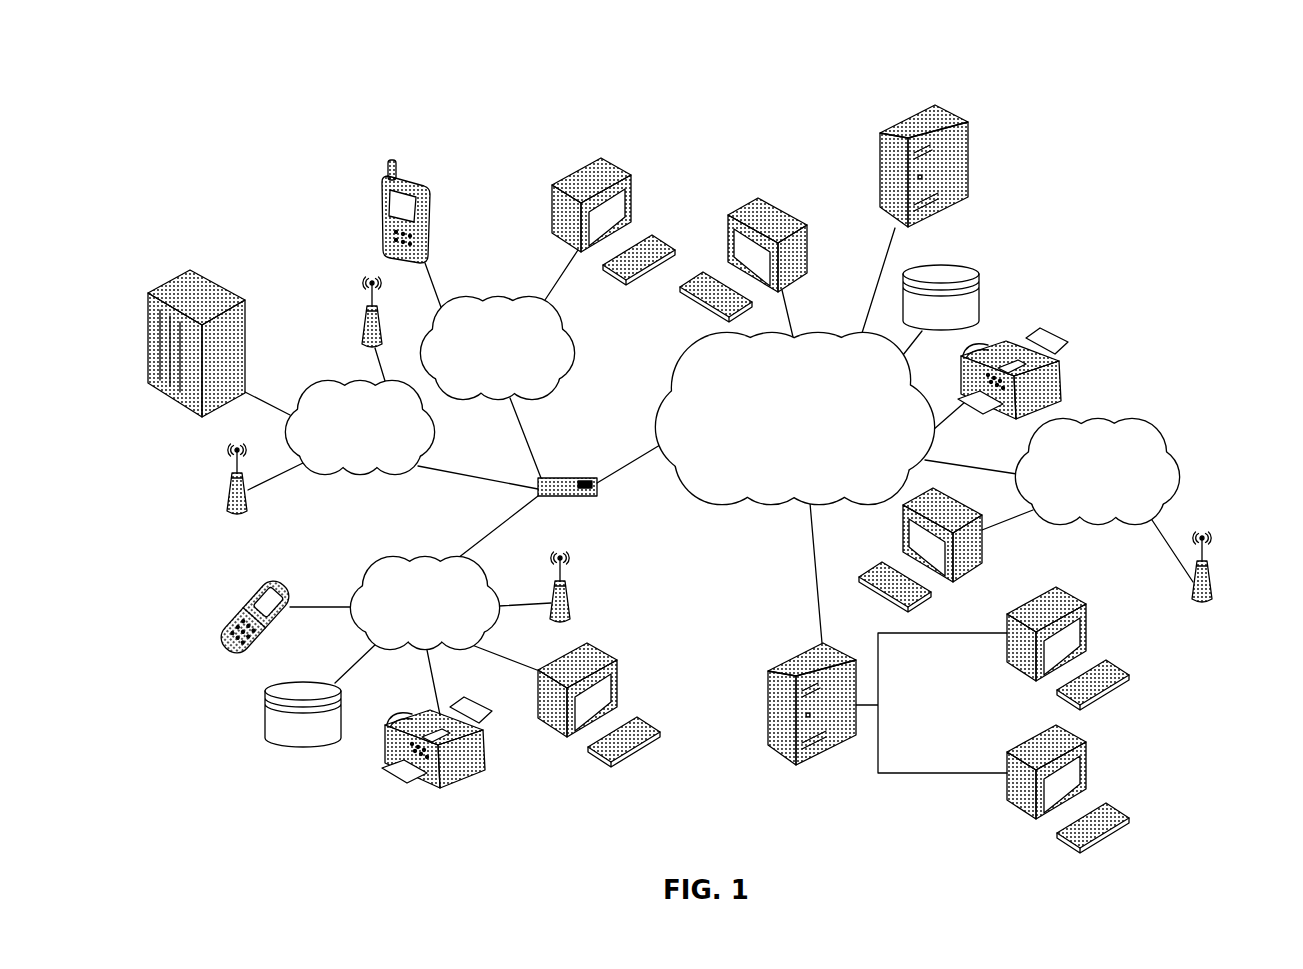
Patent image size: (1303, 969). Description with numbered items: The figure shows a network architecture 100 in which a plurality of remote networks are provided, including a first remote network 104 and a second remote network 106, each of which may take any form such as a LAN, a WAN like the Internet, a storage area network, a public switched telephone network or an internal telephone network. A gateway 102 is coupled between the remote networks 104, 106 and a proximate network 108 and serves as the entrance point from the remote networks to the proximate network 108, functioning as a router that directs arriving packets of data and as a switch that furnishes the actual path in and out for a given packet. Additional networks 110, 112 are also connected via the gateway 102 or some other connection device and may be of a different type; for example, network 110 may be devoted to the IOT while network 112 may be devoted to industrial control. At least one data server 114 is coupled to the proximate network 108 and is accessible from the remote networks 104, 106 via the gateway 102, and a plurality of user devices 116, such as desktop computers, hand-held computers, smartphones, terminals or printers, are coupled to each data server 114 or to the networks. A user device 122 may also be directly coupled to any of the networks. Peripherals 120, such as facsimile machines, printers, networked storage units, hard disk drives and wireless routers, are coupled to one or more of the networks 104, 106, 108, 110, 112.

The network architecture 100 is at (728, 122).
The gateway 102 is at (548, 478).
The first remote network 104 is at (357, 580).
The second remote network 106 is at (572, 349).
The proximate network 108 is at (730, 495).
The additional network 110 is at (305, 392).
The additional network 112 is at (1175, 435).
The data server 114 is at (968, 160).
The user device 116 is at (430, 213).
The peripheral 120 is at (240, 298).
The user device 122 is at (805, 229).